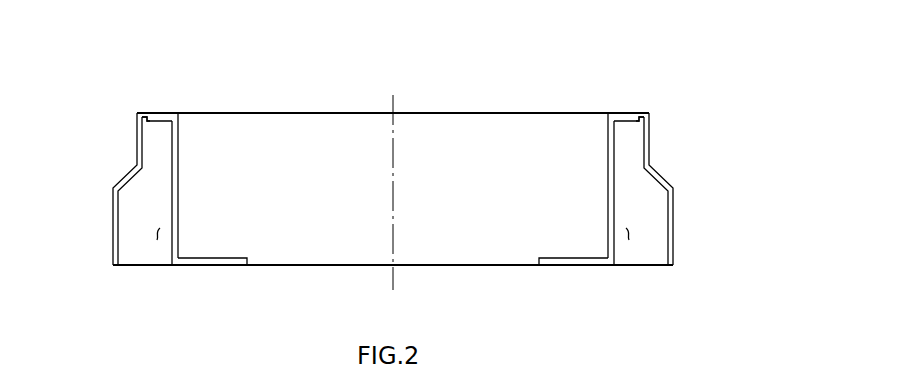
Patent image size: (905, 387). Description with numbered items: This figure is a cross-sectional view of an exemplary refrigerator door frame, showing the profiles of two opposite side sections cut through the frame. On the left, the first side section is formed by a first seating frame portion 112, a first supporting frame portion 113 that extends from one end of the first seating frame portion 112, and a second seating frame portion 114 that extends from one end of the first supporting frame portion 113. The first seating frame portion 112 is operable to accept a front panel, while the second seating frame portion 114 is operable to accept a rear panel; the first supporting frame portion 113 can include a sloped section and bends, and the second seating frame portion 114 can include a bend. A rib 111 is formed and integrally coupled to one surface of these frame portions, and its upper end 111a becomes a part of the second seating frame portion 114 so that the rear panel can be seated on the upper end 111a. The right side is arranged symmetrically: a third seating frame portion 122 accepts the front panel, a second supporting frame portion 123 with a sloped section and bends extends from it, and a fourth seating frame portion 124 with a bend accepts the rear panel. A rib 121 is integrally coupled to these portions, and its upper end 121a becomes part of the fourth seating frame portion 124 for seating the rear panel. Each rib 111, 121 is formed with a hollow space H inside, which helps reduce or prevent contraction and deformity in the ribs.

The rib 111 is at (178, 193).
The upper end of the rib 111a is at (166, 113).
The first seating frame portion 112 is at (203, 266).
The first supporting frame portion 113 is at (128, 175).
The second seating frame portion 114 is at (193, 90).
The rib 121 is at (608, 193).
The upper end of the rib 121a is at (620, 113).
The third seating frame portion 122 is at (583, 266).
The second supporting frame portion 123 is at (658, 175).
The fourth seating frame portion 124 is at (644, 90).
The hollow space H is at (162, 233).